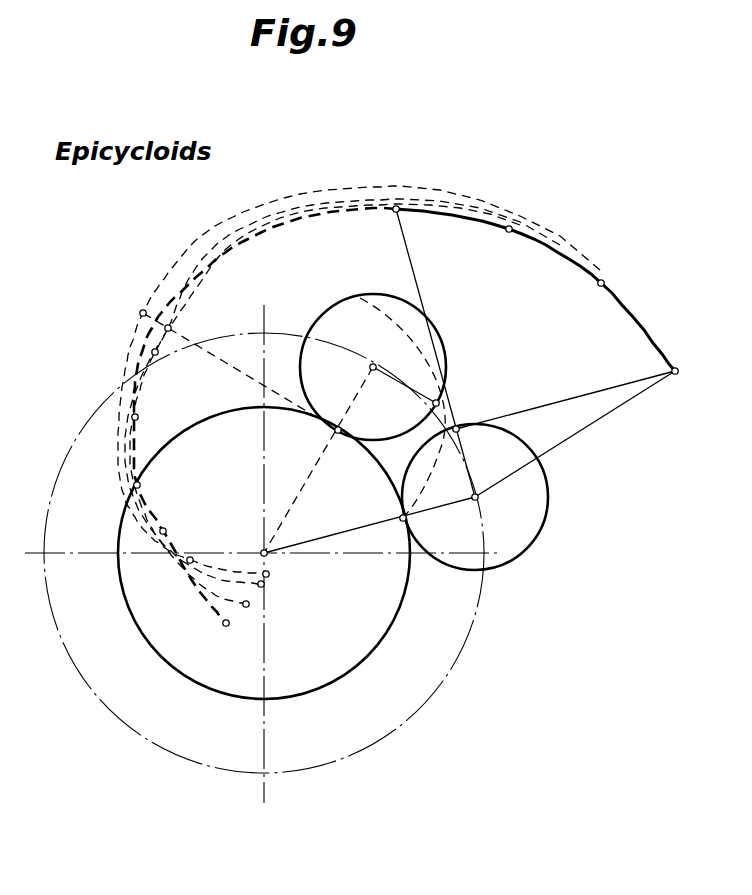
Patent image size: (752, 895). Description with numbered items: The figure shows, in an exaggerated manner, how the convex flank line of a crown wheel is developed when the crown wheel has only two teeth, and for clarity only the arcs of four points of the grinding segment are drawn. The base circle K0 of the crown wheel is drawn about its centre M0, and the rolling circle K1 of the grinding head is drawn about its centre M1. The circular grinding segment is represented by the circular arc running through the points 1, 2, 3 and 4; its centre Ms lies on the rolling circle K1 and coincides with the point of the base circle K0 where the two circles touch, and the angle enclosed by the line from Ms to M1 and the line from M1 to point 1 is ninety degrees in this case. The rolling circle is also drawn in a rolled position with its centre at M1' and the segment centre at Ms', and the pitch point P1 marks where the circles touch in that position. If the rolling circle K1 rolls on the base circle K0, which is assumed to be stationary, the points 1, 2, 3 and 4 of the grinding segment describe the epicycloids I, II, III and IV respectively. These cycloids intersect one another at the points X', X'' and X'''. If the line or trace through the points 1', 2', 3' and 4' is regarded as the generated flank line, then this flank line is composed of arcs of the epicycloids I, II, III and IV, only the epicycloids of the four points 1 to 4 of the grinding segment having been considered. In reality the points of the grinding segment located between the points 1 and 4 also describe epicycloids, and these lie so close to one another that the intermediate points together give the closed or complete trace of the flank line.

The base circle of the crown wheel K0 is at (367, 656).
The rolling circle of the grinding head K1 is at (540, 528).
The center of base circle M0 is at (252, 543).
The center of rolling circle M1 is at (494, 503).
The center of rolling circle in rolled position M1' is at (378, 355).
The centre of the grinding segment Ms is at (420, 529).
The contact point in rolled position Ms' is at (420, 395).
The pitch point P1 is at (343, 447).
The point of the grinding segment 1 is at (404, 225).
The point of the grinding segment 2 is at (502, 244).
The point of the grinding segment 3 is at (593, 296).
The point of the grinding segment 4 is at (669, 388).
The point of the generated flank line 1' is at (180, 327).
The point of the generated flank line 2' is at (146, 420).
The point of the generated flank line 3' is at (173, 521).
The point of the generated flank line 4' is at (277, 583).
The intersection point of the cycloids X' is at (164, 355).
The intersection point of the cycloids X'' is at (151, 485).
The intersection point of the cycloids X''' is at (204, 551).
The epicycloid I is at (273, 238).
The epicycloid II is at (243, 246).
The epicycloid III is at (206, 266).
The epicycloid IV is at (174, 270).